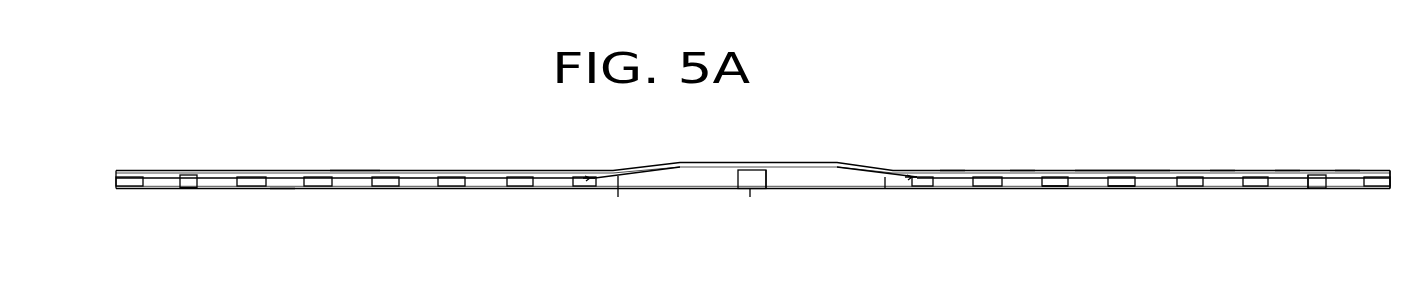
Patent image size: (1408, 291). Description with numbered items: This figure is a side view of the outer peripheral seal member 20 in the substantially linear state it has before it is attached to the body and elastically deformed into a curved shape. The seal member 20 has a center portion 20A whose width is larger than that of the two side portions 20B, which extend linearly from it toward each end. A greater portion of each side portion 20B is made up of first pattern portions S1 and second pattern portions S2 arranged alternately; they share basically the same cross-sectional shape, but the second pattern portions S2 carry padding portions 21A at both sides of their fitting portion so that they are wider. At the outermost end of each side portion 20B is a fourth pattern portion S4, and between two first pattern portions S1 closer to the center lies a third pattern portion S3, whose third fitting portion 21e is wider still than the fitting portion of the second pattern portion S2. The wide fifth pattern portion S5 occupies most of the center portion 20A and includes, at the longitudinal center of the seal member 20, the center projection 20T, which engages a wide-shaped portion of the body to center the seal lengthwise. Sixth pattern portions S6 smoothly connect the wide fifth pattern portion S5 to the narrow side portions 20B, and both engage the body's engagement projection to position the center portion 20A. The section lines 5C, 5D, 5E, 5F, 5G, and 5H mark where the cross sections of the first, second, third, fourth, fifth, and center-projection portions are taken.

The outer peripheral seal member 20 is at (528, 157).
The center portion 20A is at (827, 162).
The side portions 20B is at (355, 170).
The center projection 20T is at (766, 177).
The padding portions 21A is at (1110, 190).
The third fitting portion 21e is at (1308, 185).
The first pattern portions S1 is at (282, 190).
The second pattern portions S2 is at (382, 190).
The third pattern portions S3 is at (188, 173).
The fourth pattern portions S4 is at (1385, 170).
The fifth pattern portion S5 is at (745, 190).
The sixth pattern portions S6 is at (615, 190).
The section line 5C- 5C is at (302, 133).
The section line 5D- 5D is at (404, 133).
The section line 5E- 5E is at (209, 133).
The section line 5F- 5F is at (137, 133).
The section line 5G- 5G is at (637, 133).
The section line 5H- 5H is at (769, 133).